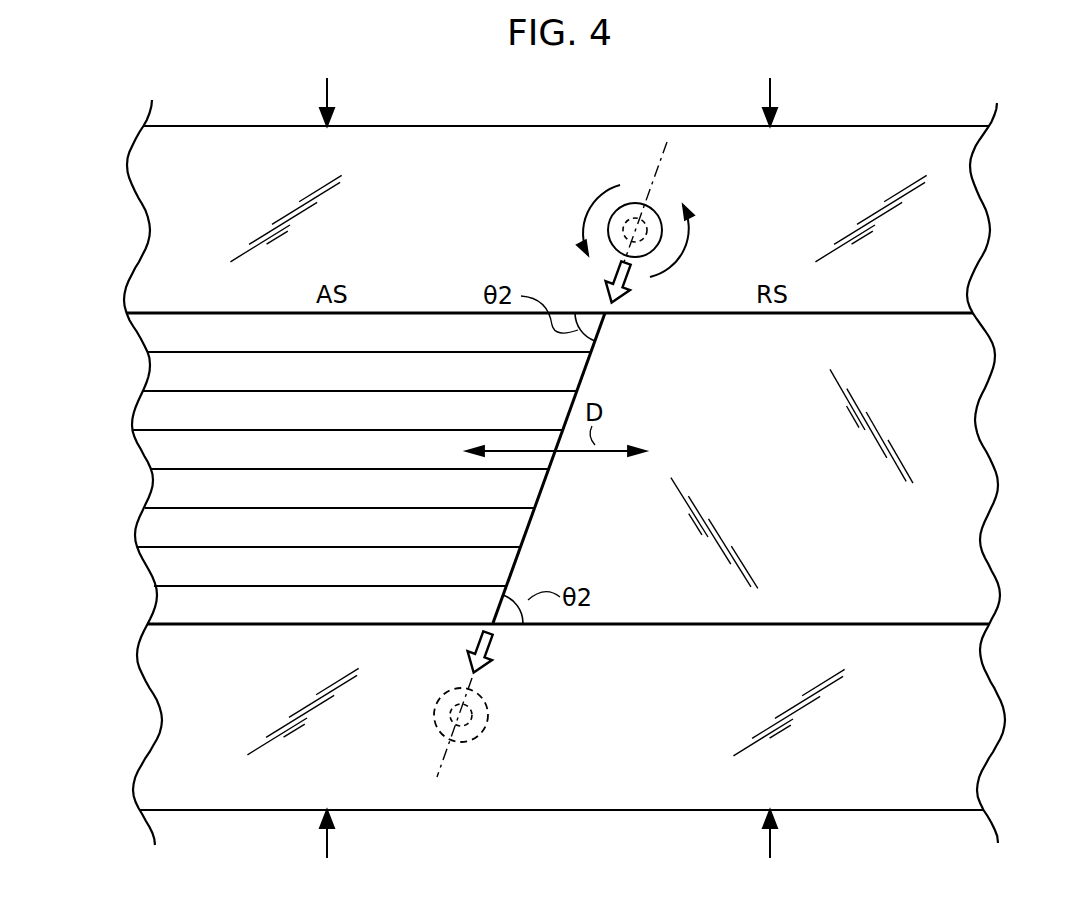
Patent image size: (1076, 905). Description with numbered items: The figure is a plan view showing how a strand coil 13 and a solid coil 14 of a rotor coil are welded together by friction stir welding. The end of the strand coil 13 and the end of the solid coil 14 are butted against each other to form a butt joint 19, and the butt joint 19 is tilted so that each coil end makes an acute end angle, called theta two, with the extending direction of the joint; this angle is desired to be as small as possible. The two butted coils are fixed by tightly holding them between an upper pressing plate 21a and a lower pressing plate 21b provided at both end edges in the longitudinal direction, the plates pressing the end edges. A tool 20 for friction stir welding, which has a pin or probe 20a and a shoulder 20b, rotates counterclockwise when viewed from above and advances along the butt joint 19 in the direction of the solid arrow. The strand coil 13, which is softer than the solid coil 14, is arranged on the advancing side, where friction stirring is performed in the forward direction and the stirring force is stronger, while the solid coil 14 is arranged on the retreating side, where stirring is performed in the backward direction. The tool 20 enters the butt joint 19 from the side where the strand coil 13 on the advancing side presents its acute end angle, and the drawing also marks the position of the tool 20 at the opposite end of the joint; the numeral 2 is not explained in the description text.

The cutting line 2 is at (563, 475).
The strand coil 13 is at (183, 457).
The solid coil 14 is at (935, 378).
The butt joint 19 is at (585, 368).
The tool 20 is at (588, 442).
The pin (probe) 20a is at (628, 205).
The shoulder 20b is at (643, 258).
The upper pressing plate 21a is at (833, 211).
The lower pressing plate 21b is at (721, 726).